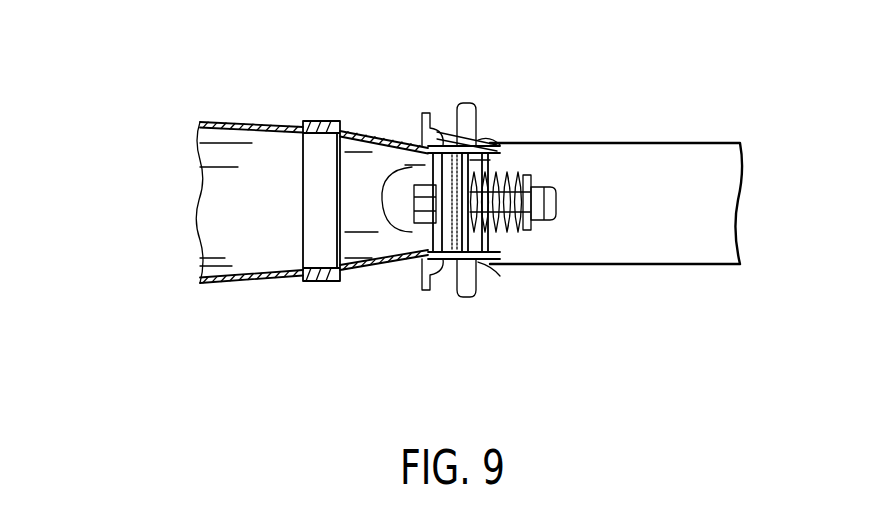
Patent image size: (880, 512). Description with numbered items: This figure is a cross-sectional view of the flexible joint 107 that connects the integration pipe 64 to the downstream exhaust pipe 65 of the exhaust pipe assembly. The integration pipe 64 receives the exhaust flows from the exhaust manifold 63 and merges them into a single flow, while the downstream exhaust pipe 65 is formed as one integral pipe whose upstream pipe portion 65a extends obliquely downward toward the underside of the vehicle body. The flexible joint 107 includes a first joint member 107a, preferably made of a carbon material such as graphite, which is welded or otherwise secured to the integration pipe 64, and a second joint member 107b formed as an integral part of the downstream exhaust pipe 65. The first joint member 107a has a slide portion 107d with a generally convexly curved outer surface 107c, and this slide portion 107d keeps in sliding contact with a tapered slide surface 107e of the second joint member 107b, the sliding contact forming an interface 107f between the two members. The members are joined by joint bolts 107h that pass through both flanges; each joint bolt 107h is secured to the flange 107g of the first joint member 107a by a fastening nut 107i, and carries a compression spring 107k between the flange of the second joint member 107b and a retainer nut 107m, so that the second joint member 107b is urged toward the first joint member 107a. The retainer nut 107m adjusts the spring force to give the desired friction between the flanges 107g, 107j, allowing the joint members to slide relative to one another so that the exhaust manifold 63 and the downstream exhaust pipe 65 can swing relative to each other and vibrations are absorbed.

The exhaust manifold 63 is at (266, 104).
The integration pipe 64 is at (362, 128).
The downstream exhaust pipe 65 is at (722, 116).
The upstream pipe portion 65a is at (654, 150).
The flexible joint 107 is at (487, 99).
The first joint member 107a is at (440, 117).
The second joint member 107b is at (485, 138).
The convexly curved outer surface 107c is at (457, 132).
The slide portion 107d is at (437, 283).
The tapered slide surface 107e is at (520, 303).
The interface 107f is at (499, 281).
The flange 107g is at (383, 273).
The joint bolt 107h is at (385, 197).
The fastening nut 107i is at (410, 170).
The plate 107j is at (485, 158).
The compression spring 107k is at (510, 230).
The retainer nut 107m is at (557, 185).